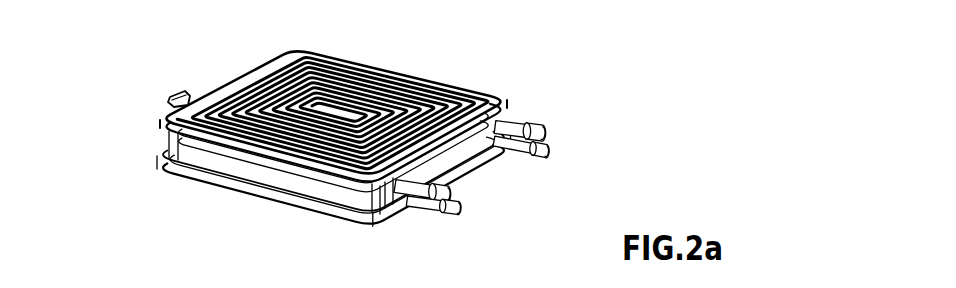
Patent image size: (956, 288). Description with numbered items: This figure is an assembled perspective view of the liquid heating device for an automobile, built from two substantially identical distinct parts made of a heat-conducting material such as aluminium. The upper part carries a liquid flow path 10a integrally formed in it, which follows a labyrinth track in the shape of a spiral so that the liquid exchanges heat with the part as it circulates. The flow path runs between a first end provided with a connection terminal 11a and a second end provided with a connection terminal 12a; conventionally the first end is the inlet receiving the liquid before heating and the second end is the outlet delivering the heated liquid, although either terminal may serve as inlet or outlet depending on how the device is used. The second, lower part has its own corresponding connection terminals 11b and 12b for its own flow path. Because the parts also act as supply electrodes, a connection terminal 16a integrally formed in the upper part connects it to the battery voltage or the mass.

The liquid flow path 10a is at (260, 57).
The connection terminal 16a is at (187, 92).
The connection terminal 12a is at (513, 125).
The connection terminal 12b is at (547, 150).
The connection terminal 11a is at (423, 190).
The connection terminal 11b is at (447, 208).